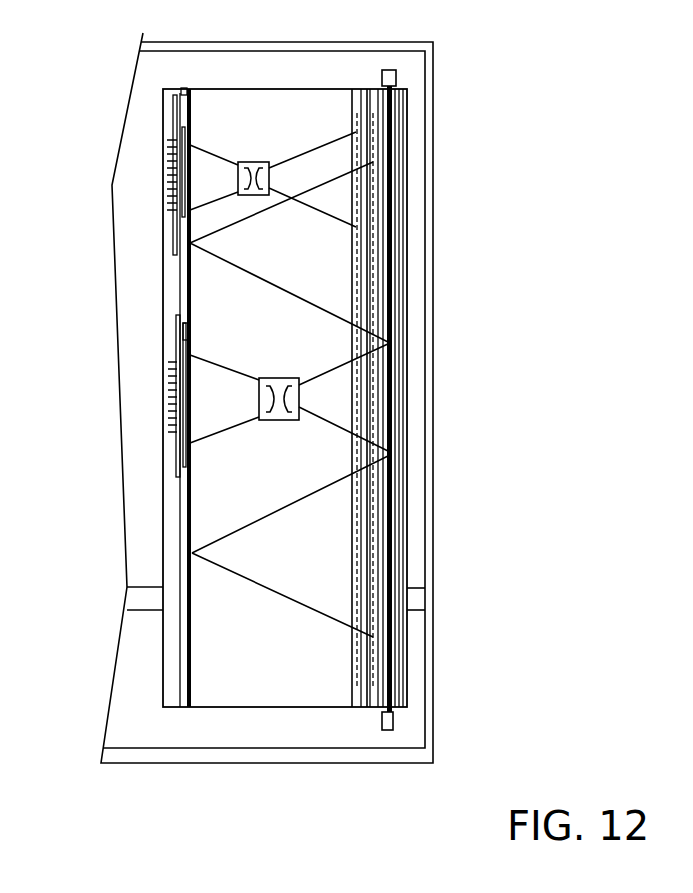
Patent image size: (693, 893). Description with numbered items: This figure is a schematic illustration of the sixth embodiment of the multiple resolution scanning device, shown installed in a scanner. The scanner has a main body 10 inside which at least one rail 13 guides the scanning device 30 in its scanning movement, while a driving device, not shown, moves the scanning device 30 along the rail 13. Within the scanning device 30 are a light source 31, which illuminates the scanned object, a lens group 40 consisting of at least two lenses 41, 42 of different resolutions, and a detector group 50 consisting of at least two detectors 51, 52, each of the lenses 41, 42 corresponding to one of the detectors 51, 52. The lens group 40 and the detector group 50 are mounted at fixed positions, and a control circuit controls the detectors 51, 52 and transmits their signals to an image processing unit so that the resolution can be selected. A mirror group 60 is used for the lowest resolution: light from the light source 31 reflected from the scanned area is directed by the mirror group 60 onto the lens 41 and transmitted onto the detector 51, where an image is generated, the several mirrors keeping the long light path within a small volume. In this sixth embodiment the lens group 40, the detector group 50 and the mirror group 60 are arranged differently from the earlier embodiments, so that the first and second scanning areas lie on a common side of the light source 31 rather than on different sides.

The main body 10 is at (433, 655).
The rail 13 is at (150, 602).
The scanning device 30 is at (157, 83).
The light source 31 is at (380, 722).
The lens group 40 is at (288, 430).
The lens 41 is at (300, 403).
The lens 42 is at (262, 195).
The detector group 50 is at (170, 452).
The detector 51 is at (180, 343).
The detector 52 is at (177, 247).
The mirror group 60 is at (337, 692).